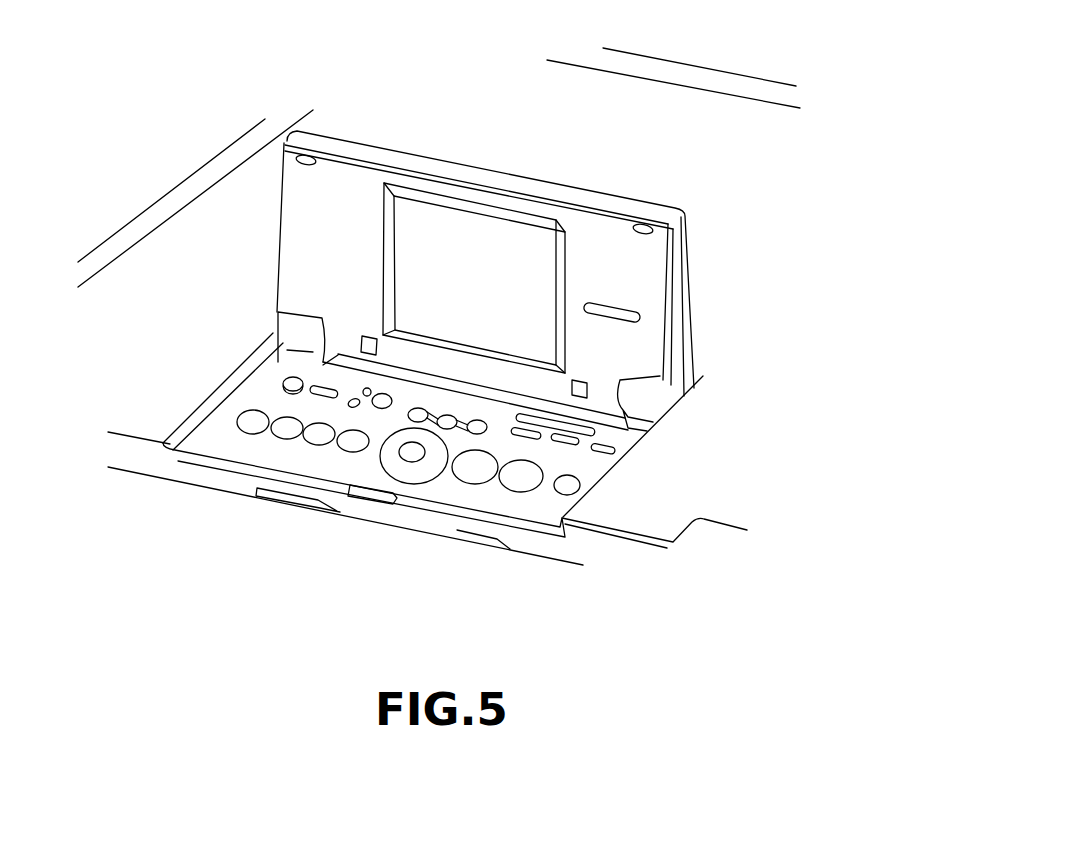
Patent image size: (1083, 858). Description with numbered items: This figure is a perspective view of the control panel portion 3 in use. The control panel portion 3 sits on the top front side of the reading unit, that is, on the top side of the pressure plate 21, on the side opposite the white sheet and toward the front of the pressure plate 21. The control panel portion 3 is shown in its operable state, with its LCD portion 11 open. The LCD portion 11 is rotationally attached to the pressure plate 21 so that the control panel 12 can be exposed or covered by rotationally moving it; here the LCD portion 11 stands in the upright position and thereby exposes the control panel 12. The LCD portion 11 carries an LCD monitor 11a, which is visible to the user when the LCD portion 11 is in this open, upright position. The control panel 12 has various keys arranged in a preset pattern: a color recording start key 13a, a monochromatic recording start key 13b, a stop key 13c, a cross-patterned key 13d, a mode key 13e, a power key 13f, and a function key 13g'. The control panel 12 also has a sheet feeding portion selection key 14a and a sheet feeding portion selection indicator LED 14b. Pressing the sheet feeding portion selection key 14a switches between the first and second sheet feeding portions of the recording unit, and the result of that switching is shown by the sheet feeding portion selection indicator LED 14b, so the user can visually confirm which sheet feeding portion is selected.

The control panel portion 3 is at (231, 342).
The LCD portion 11 is at (354, 208).
The LCD monitor 11a is at (490, 270).
The control panel 12 is at (232, 452).
The color recording start key 13a is at (522, 478).
The monochromatic recording start key 13b is at (474, 470).
The stop key 13c is at (567, 487).
The cross-patterned key 13d is at (413, 458).
The mode key 13e is at (287, 430).
The power key 13f is at (293, 382).
The function key 13g' is at (606, 415).
The sheet feeding portion selection key 14a is at (382, 406).
The sheet feeding portion selection indicator LED 14b is at (352, 407).
The pressure plate 21 is at (740, 155).